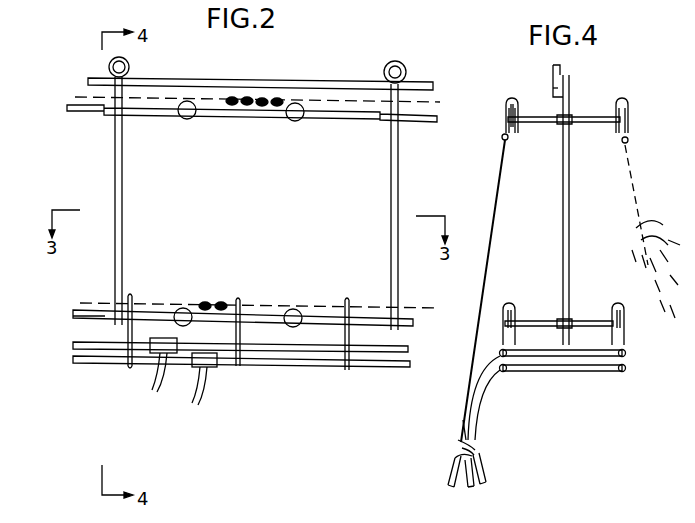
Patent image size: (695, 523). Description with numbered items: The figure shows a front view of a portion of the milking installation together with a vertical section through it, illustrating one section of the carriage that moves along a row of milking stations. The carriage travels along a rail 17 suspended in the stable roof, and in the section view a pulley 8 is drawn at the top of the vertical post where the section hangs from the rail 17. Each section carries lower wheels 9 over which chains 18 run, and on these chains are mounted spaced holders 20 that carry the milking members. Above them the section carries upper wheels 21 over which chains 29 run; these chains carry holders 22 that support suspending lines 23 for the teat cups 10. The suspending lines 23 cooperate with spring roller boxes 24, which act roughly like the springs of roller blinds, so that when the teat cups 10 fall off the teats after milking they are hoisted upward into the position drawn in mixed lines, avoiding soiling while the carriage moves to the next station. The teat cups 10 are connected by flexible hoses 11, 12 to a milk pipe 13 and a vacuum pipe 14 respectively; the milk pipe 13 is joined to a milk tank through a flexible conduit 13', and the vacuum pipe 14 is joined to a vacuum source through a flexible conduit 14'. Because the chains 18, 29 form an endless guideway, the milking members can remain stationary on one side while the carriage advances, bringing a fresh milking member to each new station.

In FIG. 2, the pulley / hanger 8 is at (129, 65).
In FIG. 4, the pulley / hanger 8 is at (568, 63).
In FIG. 2, the lower wheels 9 is at (186, 308).
In FIG. 4, the lower wheels 9 is at (516, 328).
In FIG. 4, the teat cups 10 is at (480, 465).
In FIG. 4, the flexible hose 11 is at (470, 407).
In FIG. 4, the flexible hose 12 is at (478, 425).
In FIG. 2, the milk pipe 13 is at (254, 337).
In FIG. 4, the milk pipe 13 is at (551, 342).
In FIG. 2, the flexible conduit 13' is at (138, 367).
In FIG. 2, the vacuum pipe 14 is at (259, 364).
In FIG. 4, the vacuum pipe 14 is at (563, 381).
In FIG. 2, the flexible conduit 14' is at (221, 381).
In FIG. 2, the rail 17 is at (318, 84).
In FIG. 4, the rail 17 is at (553, 91).
In FIG. 2, the chains 18 is at (214, 302).
In FIG. 4, the chains 18 is at (512, 302).
In FIG. 2, the holders 20 is at (133, 296).
In FIG. 4, the holders 20 is at (508, 297).
In FIG. 2, the upper wheels 21 is at (185, 119).
In FIG. 4, the upper wheels 21 is at (518, 125).
In FIG. 4, the holders 22 is at (505, 119).
In FIG. 4, the suspending lines 23 is at (495, 196).
In FIG. 4, the spring roller boxes 24 is at (502, 138).
In FIG. 2, the chains 29 is at (246, 108).
In FIG. 4, the chains 29 is at (512, 100).